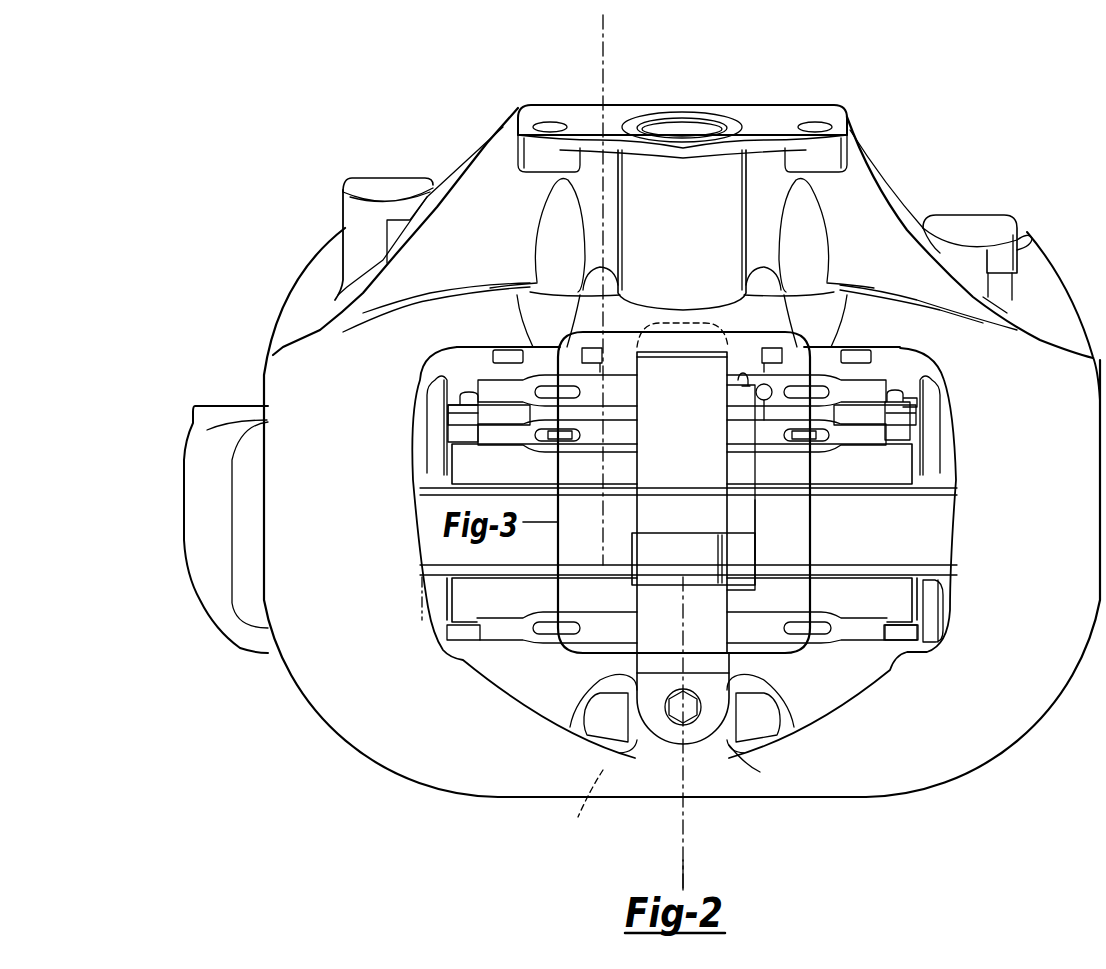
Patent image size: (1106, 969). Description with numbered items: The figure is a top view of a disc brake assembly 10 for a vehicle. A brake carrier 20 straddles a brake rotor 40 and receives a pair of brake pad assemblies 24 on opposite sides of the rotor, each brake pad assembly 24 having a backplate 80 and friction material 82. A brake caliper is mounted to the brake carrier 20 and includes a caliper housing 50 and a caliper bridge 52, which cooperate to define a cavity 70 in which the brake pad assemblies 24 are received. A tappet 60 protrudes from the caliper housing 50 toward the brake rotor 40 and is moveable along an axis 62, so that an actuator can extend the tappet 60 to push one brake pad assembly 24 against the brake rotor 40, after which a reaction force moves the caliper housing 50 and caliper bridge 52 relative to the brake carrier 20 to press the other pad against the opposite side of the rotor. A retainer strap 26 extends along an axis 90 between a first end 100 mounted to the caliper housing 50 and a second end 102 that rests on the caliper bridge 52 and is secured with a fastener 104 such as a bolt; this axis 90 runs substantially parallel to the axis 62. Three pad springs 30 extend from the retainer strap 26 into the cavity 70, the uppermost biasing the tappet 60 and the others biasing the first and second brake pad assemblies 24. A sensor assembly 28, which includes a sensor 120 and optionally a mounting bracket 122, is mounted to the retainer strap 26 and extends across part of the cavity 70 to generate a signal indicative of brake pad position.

The disc brake assembly 10 is at (318, 185).
The brake carrier 20 is at (197, 502).
The brake pad assembly 24 is at (448, 448).
The retainer strap 26 is at (695, 478).
The sensor assembly 28 is at (760, 527).
The pad spring 30 is at (602, 405).
The brake rotor 40 is at (602, 535).
The caliper housing 50 is at (483, 140).
The caliper bridge 52 is at (418, 787).
The tappet 60 is at (770, 383).
The axis 62 is at (683, 873).
The cavity 70 is at (958, 484).
The backplate 80 is at (910, 430).
The friction material 82 is at (910, 470).
The axis 90 is at (680, 765).
The first end 100 is at (690, 330).
The second end 102 is at (697, 737).
The fastener 104 is at (670, 722).
The sensor 120 is at (757, 479).
The mounting bracket 122 is at (702, 567).